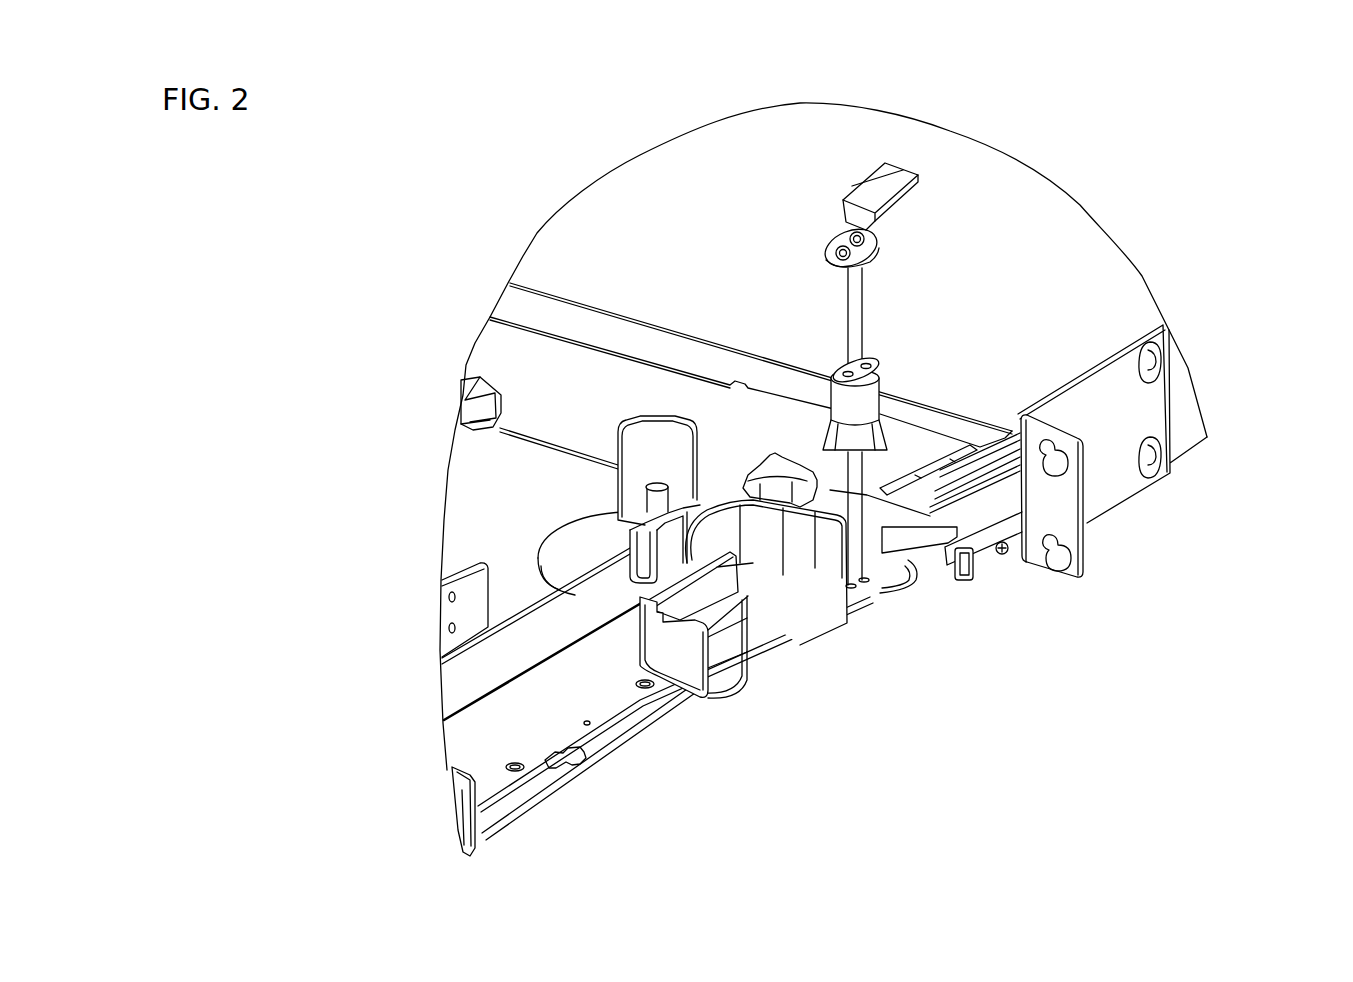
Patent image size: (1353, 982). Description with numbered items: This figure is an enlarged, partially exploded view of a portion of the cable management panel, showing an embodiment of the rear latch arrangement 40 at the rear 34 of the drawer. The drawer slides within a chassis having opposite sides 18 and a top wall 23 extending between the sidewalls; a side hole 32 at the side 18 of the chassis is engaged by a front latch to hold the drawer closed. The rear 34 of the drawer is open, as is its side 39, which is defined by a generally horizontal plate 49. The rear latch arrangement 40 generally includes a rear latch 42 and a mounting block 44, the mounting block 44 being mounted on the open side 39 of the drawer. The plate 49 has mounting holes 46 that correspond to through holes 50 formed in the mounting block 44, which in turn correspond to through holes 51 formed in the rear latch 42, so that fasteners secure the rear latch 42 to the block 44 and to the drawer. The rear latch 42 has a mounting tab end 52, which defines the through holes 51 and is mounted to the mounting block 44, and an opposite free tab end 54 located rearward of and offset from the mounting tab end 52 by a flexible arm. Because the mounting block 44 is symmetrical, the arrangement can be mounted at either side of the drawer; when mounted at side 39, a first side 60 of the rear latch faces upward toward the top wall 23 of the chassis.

The side 18 is at (1208, 474).
The top wall 23 is at (1005, 222).
The side hole 32 is at (966, 578).
The rear 34 is at (545, 408).
The side 39 is at (640, 754).
The rear latch arrangement 40 is at (897, 342).
The rear latch 42 is at (858, 407).
The mounting block 44 is at (845, 360).
The mounting holes 46 is at (864, 582).
The horizontal plate 49 is at (517, 738).
The through holes 50 is at (850, 374).
The through holes 51 is at (841, 252).
The mounting tab end 52 is at (844, 250).
The free tab end 54 is at (889, 176).
The first side 60 is at (880, 183).